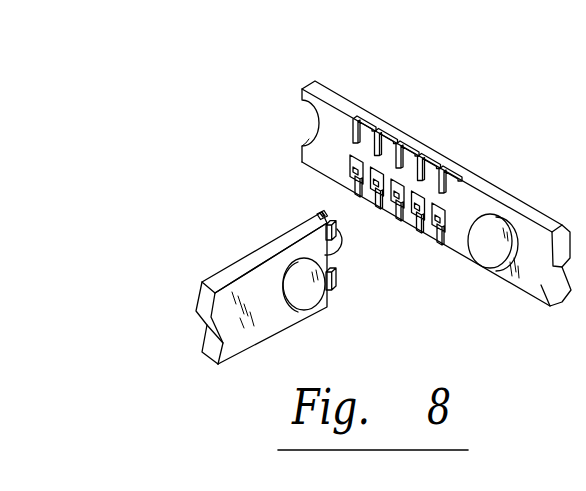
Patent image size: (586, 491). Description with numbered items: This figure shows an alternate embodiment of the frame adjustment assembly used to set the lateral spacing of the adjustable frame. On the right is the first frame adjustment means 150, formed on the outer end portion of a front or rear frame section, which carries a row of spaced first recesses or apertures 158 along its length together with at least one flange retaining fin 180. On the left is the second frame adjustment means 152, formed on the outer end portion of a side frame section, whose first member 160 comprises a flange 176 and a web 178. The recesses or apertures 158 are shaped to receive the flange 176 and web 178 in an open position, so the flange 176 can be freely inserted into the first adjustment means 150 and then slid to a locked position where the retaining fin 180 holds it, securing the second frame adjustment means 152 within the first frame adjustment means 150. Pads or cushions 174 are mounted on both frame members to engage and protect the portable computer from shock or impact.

The first frame adjustment means 150 is at (417, 104).
The second frame adjustment means 152 is at (255, 118).
The first recesses or apertures 158 is at (437, 151).
The flange retaining fin 180 is at (422, 216).
The pads or cushions 174 is at (492, 262).
The first member 160 is at (325, 244).
The flange 176 is at (320, 216).
The web 178 is at (321, 217).